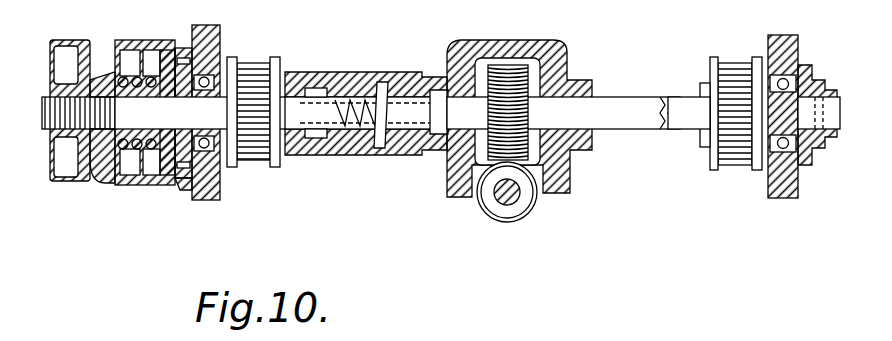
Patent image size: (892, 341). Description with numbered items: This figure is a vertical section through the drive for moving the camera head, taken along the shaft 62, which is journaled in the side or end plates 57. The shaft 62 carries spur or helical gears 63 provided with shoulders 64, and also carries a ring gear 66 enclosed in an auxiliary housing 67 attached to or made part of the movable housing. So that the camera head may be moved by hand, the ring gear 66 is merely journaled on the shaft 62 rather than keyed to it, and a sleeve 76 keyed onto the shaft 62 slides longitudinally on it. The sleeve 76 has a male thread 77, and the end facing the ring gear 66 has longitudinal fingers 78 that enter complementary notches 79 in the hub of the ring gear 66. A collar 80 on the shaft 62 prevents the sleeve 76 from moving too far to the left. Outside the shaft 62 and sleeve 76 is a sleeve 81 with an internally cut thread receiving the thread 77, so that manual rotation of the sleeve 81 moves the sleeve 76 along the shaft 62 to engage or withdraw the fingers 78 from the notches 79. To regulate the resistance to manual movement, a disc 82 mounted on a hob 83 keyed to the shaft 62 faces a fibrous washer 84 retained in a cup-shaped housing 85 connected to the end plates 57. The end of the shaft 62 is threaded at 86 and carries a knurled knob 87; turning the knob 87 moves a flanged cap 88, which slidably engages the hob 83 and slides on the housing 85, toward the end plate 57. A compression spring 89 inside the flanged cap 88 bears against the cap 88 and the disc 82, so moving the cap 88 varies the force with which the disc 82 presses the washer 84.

The end plates 57 is at (212, 35).
The shaft 62 is at (616, 105).
The spur or helical gears 63 is at (250, 62).
The shoulders 64 is at (272, 168).
The ring gear 66 is at (488, 160).
The auxiliary housing 67 is at (470, 42).
The sleeve 76 is at (408, 152).
The male thread 77 is at (378, 152).
The fingers 78 is at (440, 140).
The notches 79 is at (478, 190).
The collar 80 is at (330, 140).
The sleeve 81 is at (303, 157).
The disc 82 is at (164, 150).
The hob 83 is at (115, 85).
The washer 84 is at (180, 178).
The housing 85 is at (183, 190).
The threaded end 86 is at (50, 115).
The knurled knob 87 is at (72, 184).
The flanged cap 88 is at (130, 186).
The compression spring 89 is at (104, 168).